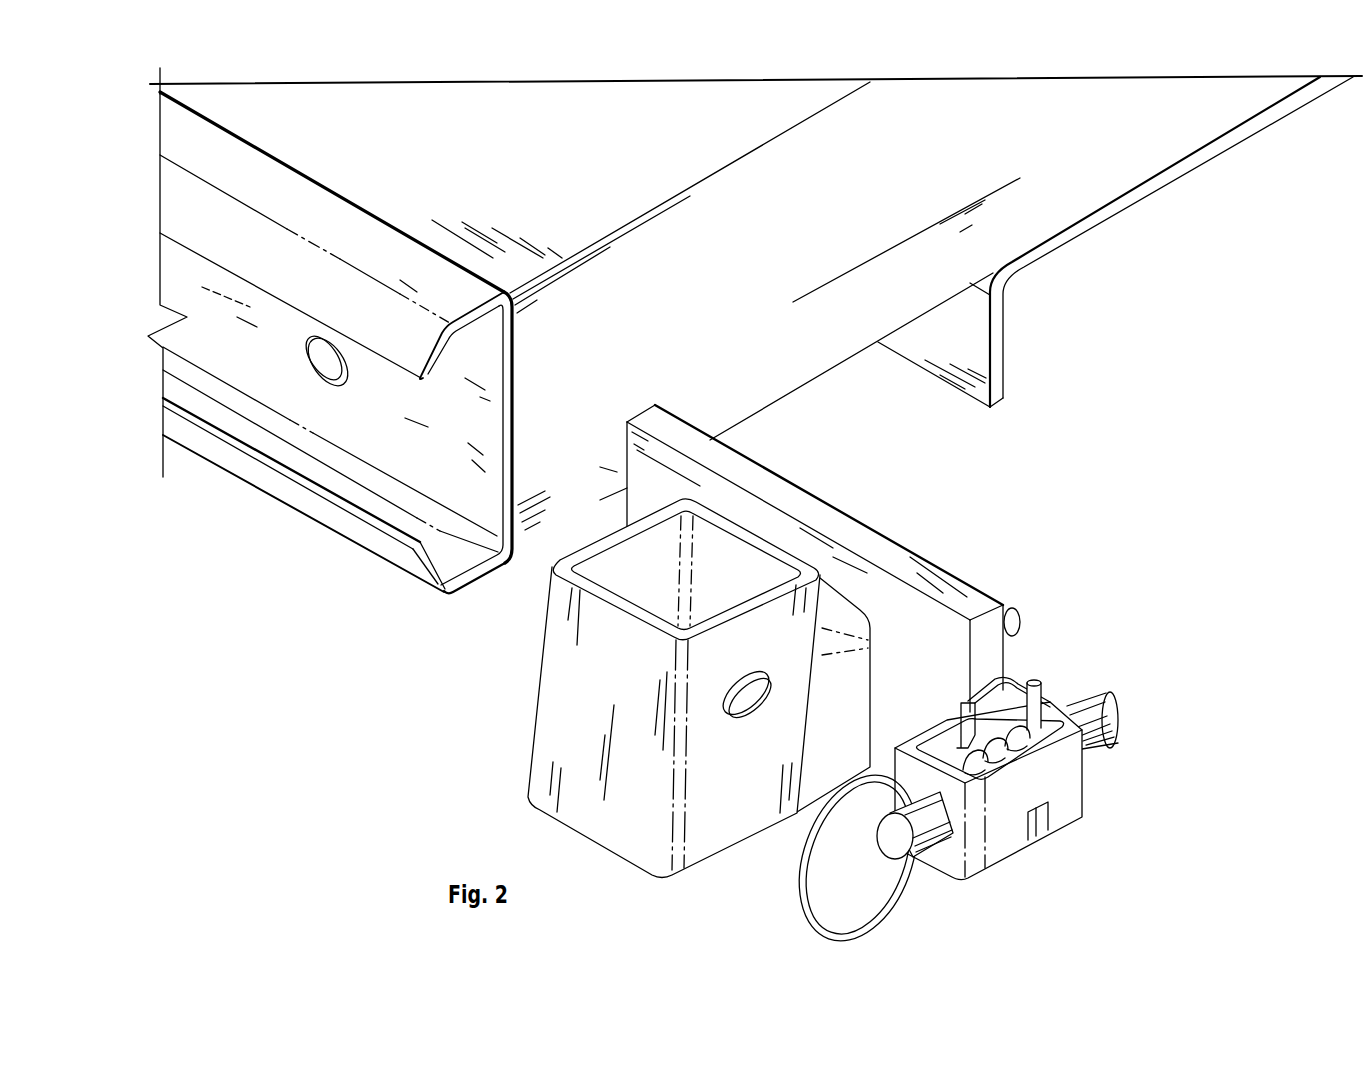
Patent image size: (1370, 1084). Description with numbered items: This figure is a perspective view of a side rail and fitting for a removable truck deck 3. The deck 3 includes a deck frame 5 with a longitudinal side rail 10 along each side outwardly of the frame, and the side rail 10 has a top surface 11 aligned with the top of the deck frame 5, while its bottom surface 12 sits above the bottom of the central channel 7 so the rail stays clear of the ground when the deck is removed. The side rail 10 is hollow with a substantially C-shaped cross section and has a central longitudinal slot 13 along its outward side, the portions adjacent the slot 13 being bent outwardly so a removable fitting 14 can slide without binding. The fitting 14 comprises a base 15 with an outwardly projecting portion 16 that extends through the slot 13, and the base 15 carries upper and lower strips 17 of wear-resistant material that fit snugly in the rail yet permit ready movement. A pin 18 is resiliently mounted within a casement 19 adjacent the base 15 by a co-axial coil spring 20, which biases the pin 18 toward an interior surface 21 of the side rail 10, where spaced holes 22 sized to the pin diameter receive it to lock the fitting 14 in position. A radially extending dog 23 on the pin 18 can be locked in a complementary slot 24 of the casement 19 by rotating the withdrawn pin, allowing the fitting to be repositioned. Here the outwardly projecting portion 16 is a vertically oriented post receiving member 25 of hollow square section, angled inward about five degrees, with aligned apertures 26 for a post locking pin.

The removable truck deck 3 is at (756, 299).
The deck frame 5 is at (793, 377).
The central channel 7 is at (997, 357).
The side rail 10 is at (351, 408).
The top surface 11 is at (291, 190).
The bottom surface 12 is at (457, 565).
The central longitudinal slot 13 is at (357, 493).
The removable fitting 14 is at (844, 681).
The base 15 is at (830, 517).
The outwardly projecting portion 16 is at (773, 858).
The upper and lower strips 17 is at (1012, 625).
The pin 18 is at (969, 801).
The casement 19 is at (1015, 773).
The coil spring 20 is at (1012, 748).
The interior surface 21 is at (488, 437).
The holes 22 is at (340, 370).
The dog 23 is at (1040, 690).
The slot 24 is at (955, 722).
The post receiving member 25 is at (674, 705).
The aligned apertures 26 is at (745, 695).